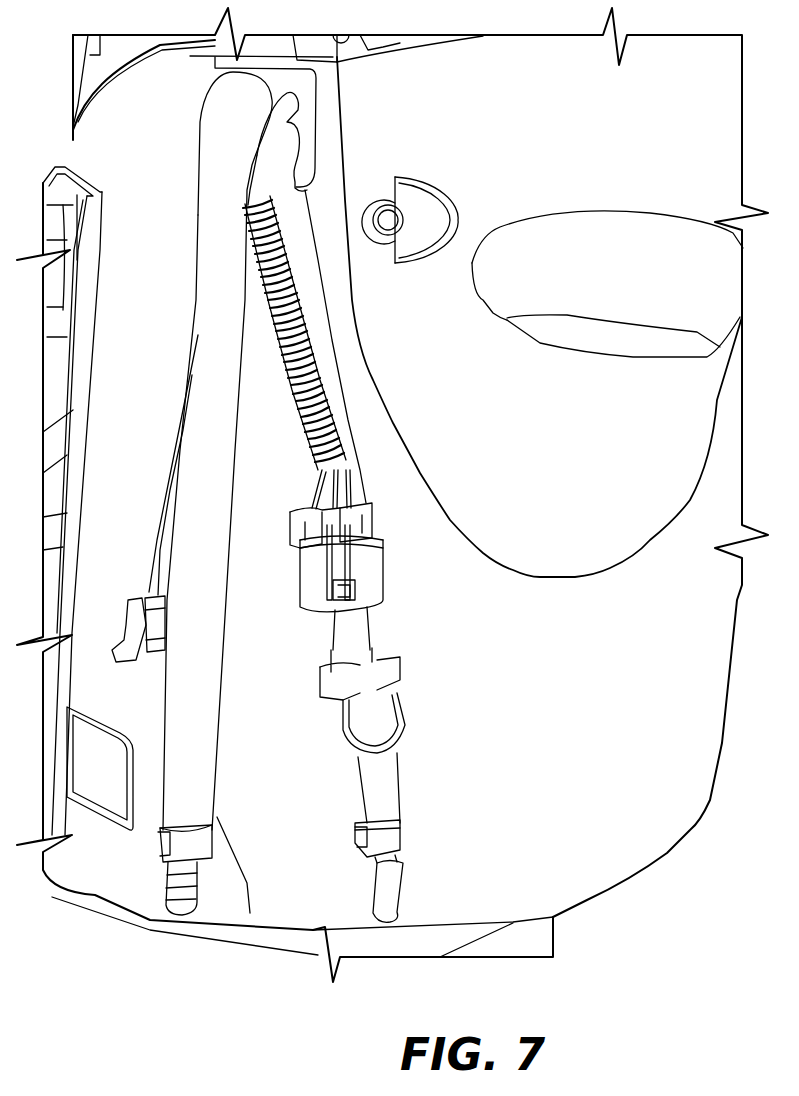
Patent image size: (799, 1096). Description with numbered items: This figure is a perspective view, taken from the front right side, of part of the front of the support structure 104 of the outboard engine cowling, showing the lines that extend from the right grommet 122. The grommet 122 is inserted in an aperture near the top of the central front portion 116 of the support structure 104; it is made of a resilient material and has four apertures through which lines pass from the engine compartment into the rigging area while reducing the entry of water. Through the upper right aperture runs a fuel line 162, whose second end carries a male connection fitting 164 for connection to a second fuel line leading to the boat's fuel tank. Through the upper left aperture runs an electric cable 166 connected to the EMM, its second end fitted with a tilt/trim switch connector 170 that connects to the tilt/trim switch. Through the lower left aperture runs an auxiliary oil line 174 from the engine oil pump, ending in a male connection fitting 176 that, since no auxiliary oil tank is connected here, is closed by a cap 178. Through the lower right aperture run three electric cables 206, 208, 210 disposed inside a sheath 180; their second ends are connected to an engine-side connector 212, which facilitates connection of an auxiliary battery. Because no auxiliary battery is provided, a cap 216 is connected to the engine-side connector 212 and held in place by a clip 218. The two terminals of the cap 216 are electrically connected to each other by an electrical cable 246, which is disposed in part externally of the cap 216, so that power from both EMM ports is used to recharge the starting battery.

The support structure 104 is at (675, 553).
The central front portion 116 is at (642, 415).
The right grommet 122 is at (307, 75).
The fuel line 162 is at (200, 178).
The male connection fitting 164 is at (183, 907).
The electric cable 166 is at (157, 473).
The tilt/trim switch connector 170 is at (128, 628).
The auxiliary oil line 174 is at (305, 270).
The male connection fitting 176 is at (400, 857).
The cap 178 is at (392, 913).
The sheath 180 is at (283, 347).
The electric cable 206 is at (322, 483).
The electric cable 208 is at (335, 493).
The electric cable 210 is at (343, 472).
The engine-side connector 212 is at (368, 517).
The cap 216 is at (376, 568).
The clip 218 is at (330, 593).
The electrical cable 246 is at (410, 727).